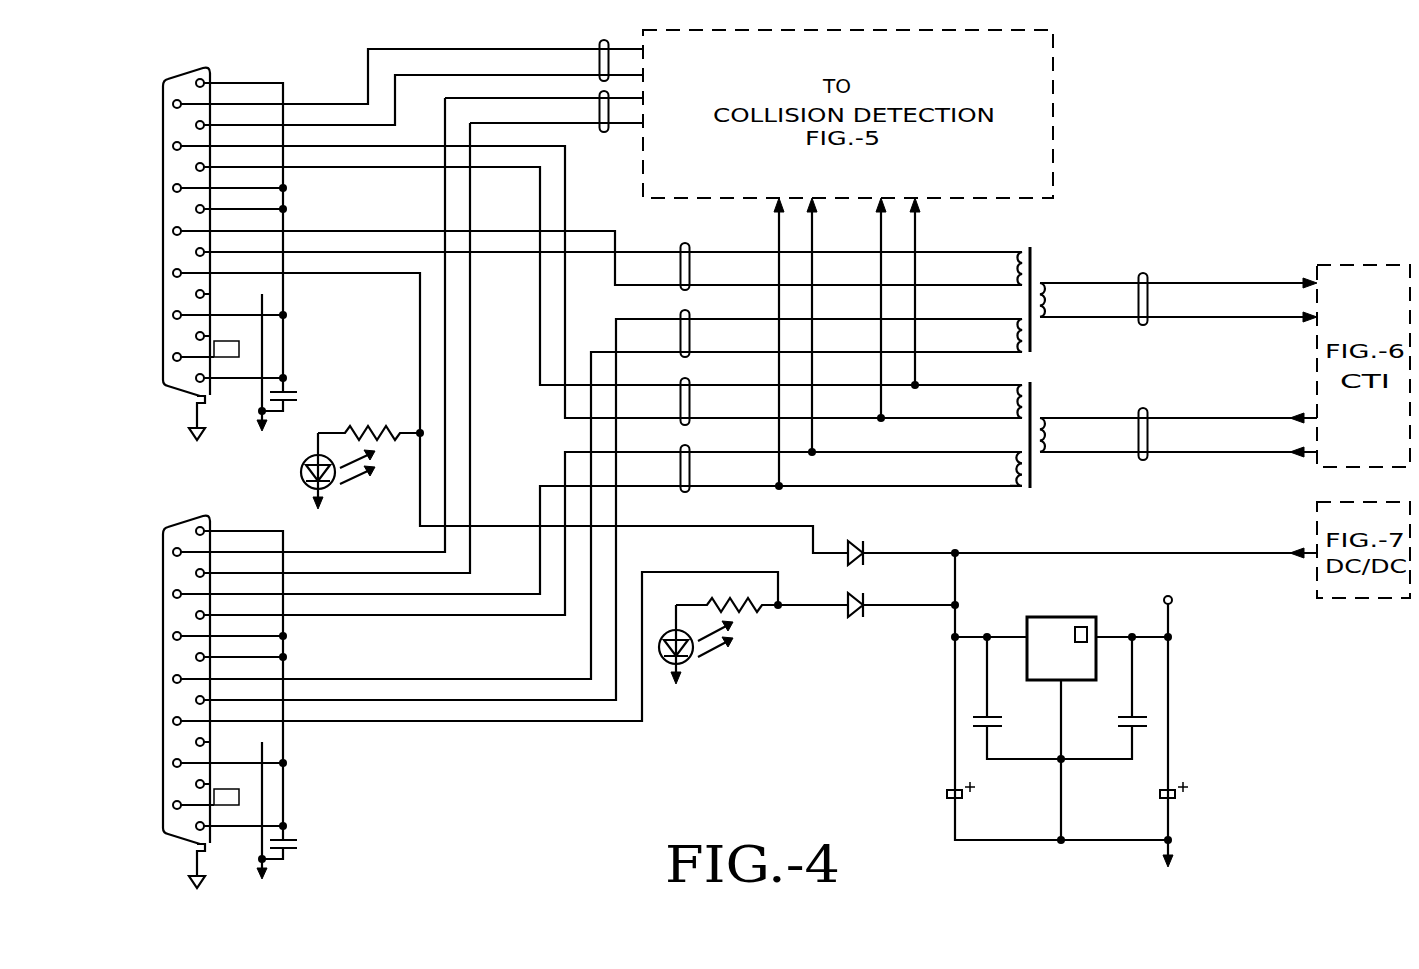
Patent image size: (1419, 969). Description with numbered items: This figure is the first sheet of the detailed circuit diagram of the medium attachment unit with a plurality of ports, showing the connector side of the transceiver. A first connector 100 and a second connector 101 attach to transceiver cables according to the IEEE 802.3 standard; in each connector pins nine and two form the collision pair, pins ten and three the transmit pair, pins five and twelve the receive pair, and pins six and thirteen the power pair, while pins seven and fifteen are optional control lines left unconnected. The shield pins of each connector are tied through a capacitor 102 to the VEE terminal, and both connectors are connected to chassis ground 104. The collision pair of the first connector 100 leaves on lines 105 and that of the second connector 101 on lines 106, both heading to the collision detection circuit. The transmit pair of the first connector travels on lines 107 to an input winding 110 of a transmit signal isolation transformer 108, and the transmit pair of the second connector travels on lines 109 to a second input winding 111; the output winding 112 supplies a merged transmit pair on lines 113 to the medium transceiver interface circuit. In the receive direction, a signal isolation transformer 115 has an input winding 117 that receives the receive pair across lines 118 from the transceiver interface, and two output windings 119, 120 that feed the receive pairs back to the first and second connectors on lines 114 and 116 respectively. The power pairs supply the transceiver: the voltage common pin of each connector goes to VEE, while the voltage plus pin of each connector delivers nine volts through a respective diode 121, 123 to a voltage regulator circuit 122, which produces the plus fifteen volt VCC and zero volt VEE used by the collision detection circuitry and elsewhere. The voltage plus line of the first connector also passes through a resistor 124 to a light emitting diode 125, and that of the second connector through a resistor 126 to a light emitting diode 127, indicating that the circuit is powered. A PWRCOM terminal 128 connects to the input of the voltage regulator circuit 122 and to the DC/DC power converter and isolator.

The first connector 100 is at (163, 113).
The second connector 101 is at (163, 561).
The capacitor 102 is at (300, 400).
The chassis ground 104 is at (192, 437).
The lines 105 is at (602, 45).
The lines 106 is at (606, 130).
The lines 107 is at (685, 425).
The transmit signal isolation transformer 108 is at (1043, 491).
The lines 109 is at (685, 492).
The input winding 110 is at (1025, 385).
The input winding 111 is at (1018, 487).
The output winding 112 is at (1045, 418).
The lines 113 is at (1143, 408).
The lines 114 is at (685, 290).
The signal isolation transformer 115 is at (1033, 232).
The lines 116 is at (685, 357).
The input winding 117 is at (1045, 283).
The lines 118 is at (1143, 273).
The output winding 119 is at (1022, 250).
The output winding 120 is at (1018, 352).
The diode 121 is at (860, 566).
The voltage regulator circuit 122 is at (1189, 714).
The diode 123 is at (847, 607).
The resistor 124 is at (365, 421).
The light emitting diode 125 is at (300, 471).
The resistor 126 is at (748, 613).
The light emitting diode 127 is at (658, 633).
The PWRCOM terminal 128 is at (1120, 549).